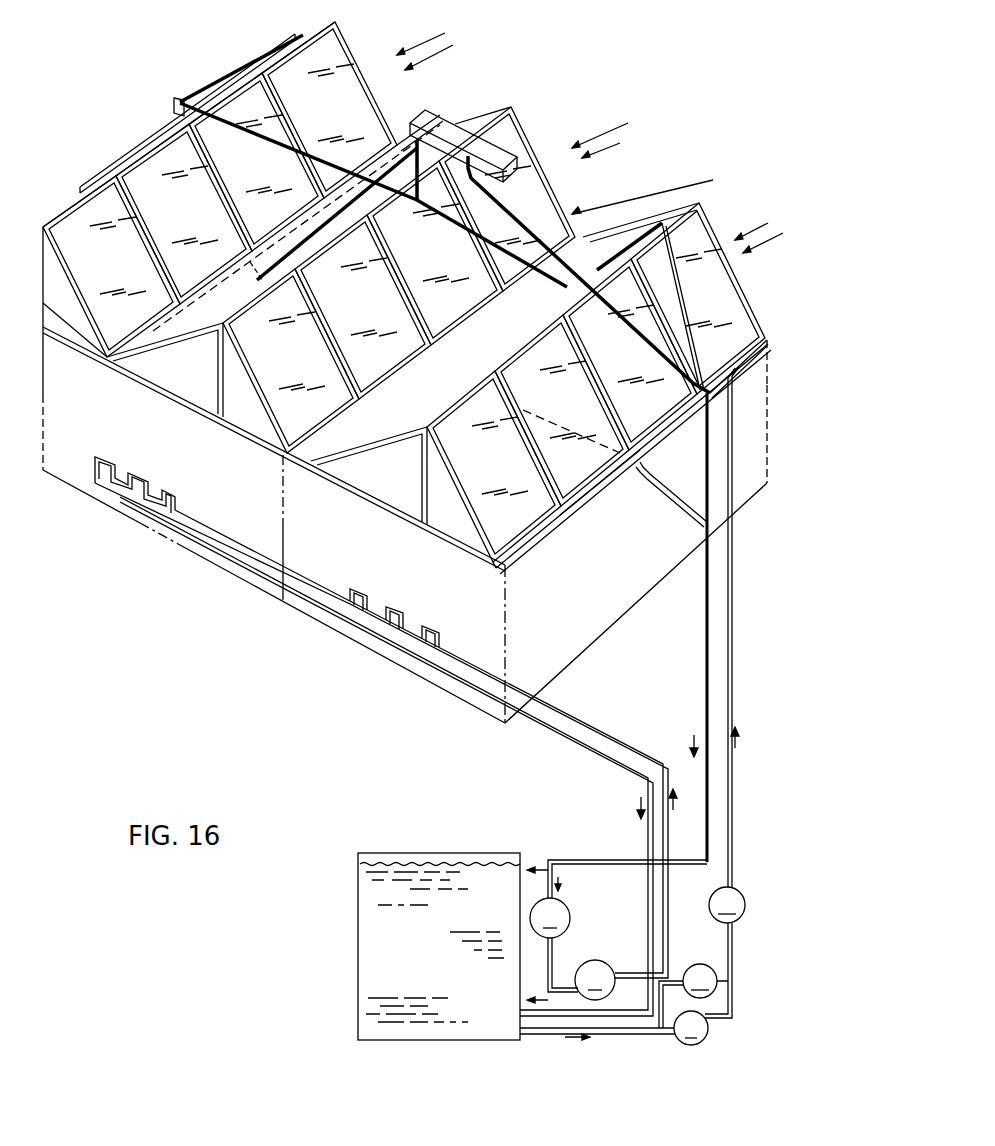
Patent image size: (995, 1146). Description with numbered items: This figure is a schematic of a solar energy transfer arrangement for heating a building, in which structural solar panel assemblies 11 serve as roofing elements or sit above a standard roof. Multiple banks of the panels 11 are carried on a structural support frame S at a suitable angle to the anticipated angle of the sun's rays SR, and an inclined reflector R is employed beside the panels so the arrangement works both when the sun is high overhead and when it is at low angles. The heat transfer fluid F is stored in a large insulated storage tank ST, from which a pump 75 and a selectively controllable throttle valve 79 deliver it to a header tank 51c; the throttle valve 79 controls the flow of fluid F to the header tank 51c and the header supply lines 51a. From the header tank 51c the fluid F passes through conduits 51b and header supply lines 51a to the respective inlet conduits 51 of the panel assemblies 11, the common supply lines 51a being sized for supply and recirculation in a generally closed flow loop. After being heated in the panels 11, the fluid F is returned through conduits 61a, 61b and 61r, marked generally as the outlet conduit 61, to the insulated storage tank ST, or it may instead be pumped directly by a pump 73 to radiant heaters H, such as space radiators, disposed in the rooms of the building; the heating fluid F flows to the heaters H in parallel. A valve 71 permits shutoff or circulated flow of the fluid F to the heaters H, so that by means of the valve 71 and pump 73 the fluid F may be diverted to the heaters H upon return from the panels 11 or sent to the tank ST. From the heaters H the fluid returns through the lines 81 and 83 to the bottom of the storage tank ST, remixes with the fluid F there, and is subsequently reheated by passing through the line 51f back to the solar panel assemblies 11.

The structural solar panel assembly 11 is at (404, 292).
The inlet conduit 51 is at (80, 198).
The header supply line 51a is at (140, 150).
The conduit 51b is at (233, 113).
The header tank 51c is at (437, 125).
The line 51f is at (731, 657).
The collector outlet conduit 61 is at (605, 486).
The return conduit 61a is at (590, 512).
The return conduit 61b is at (655, 485).
The return conduit 61r is at (705, 660).
The valve 71 is at (570, 912).
The pump 73 is at (600, 960).
The pump 75 is at (685, 1045).
The throttle valve 79 is at (747, 905).
The heat exchanger conduit 81 is at (602, 732).
The heat exchanger conduit 83 is at (587, 752).
The radiant heater H is at (143, 473).
The reflector R is at (200, 322).
The structural support frame S is at (403, 513).
The sun's rays SR is at (428, 37).
The storage tank ST is at (358, 948).
The heat transfer fluid F is at (408, 949).